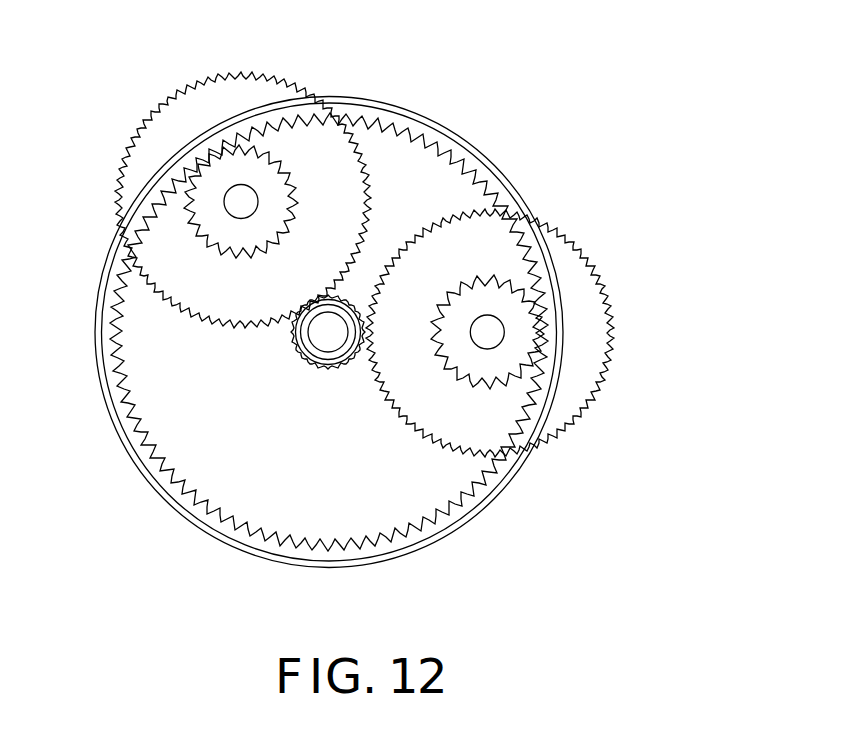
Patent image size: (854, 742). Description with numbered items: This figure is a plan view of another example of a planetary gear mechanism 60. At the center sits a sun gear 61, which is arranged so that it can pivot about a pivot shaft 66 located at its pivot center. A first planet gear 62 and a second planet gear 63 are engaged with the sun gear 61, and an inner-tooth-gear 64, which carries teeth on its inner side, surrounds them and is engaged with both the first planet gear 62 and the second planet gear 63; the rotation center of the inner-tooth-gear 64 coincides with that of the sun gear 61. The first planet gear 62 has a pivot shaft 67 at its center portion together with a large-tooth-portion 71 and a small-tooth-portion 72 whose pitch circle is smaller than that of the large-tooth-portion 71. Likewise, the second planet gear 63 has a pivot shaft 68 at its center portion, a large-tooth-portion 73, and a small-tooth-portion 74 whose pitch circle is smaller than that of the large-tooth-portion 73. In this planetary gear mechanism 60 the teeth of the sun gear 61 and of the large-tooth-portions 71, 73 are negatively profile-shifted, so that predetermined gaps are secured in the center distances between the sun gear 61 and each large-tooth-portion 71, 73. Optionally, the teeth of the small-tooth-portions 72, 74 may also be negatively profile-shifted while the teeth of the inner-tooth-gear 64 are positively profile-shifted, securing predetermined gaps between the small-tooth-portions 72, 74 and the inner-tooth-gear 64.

The planetary gear mechanism 60 is at (103, 516).
The sun gear 61 is at (307, 340).
The first planet gear 62 is at (215, 178).
The second planet gear 63 is at (520, 318).
The inner-tooth-gear 64 is at (434, 128).
The pivot shaft 66 is at (329, 334).
The pivot shaft 67 is at (242, 201).
The pivot shaft 68 is at (492, 328).
The large-tooth-portion 71 is at (187, 98).
The small-tooth-portion 72 is at (193, 217).
The large-tooth-portion 73 is at (618, 327).
The small-tooth-portion 74 is at (497, 390).